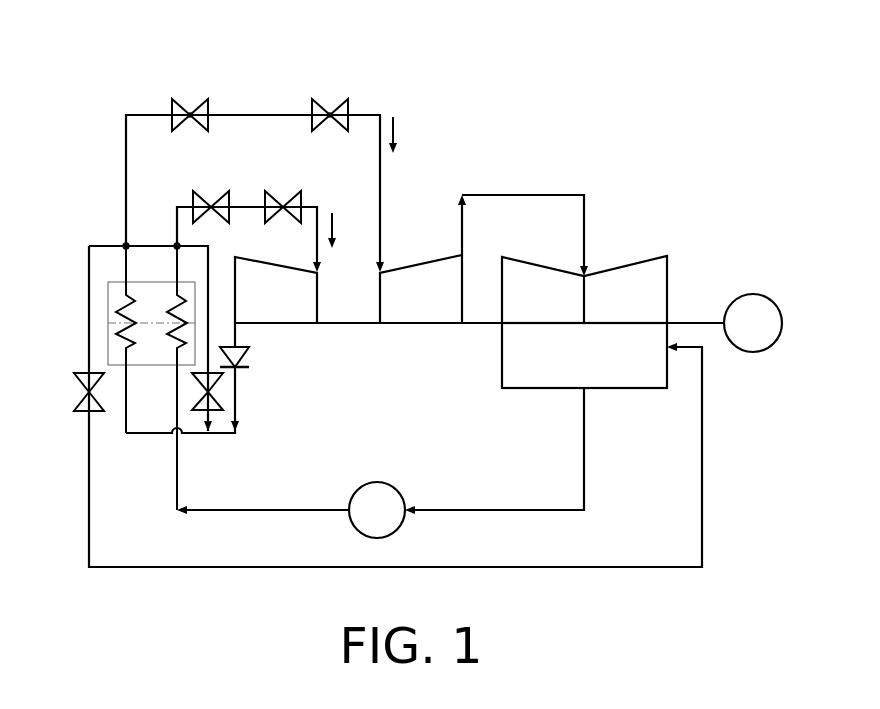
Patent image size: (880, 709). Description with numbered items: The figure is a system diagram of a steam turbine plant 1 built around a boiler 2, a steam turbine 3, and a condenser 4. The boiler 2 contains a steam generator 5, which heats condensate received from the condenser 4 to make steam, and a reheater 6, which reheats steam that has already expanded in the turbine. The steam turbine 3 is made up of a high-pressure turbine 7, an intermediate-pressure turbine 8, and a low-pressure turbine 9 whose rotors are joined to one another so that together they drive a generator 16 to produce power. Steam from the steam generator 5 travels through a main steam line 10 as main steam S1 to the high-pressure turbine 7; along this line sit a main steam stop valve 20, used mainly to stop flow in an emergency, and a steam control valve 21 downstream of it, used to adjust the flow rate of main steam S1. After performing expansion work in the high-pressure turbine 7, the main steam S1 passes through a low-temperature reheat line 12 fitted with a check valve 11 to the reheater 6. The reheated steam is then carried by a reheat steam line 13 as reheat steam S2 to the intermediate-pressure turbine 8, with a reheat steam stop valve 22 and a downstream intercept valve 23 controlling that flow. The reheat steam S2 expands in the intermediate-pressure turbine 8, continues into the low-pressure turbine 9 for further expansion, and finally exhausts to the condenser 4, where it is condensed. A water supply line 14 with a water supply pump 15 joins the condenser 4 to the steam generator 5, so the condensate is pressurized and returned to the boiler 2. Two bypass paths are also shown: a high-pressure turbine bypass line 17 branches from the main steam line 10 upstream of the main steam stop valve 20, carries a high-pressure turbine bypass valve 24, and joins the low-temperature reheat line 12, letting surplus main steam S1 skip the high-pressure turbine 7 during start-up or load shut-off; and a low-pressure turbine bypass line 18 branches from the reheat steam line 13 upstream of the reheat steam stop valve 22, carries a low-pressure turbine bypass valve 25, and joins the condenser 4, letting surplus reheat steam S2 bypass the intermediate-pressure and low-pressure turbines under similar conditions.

The steam turbine plant 1 is at (95, 78).
The boiler 2 is at (153, 365).
The steam turbine 3 is at (451, 324).
The condenser 4 is at (522, 388).
The steam generator 5 is at (175, 300).
The reheater 6 is at (115, 300).
The high-pressure turbine 7 is at (306, 323).
The intermediate-pressure turbine 8 is at (427, 263).
The low-pressure turbine 9 is at (630, 262).
The main steam line 10 is at (248, 205).
The check valve 11 is at (250, 367).
The low-temperature reheat line 12 is at (222, 398).
The reheat steam line 13 is at (265, 113).
The water supply line 14 is at (492, 510).
The water supply pump 15 is at (377, 482).
The generator 16 is at (753, 294).
The high-pressure turbine bypass line 17 is at (210, 252).
The low-pressure turbine bypass line 18 is at (89, 483).
The main steam stop valve 20 is at (211, 205).
The steam control valve 21 is at (283, 205).
The reheat steam stop valve 22 is at (190, 113).
The intercept valve 23 is at (330, 113).
The high-pressure turbine bypass valve 24 is at (238, 400).
The low-pressure turbine bypass valve 25 is at (75, 392).
The main steam S1 is at (335, 227).
The reheat steam S2 is at (400, 124).